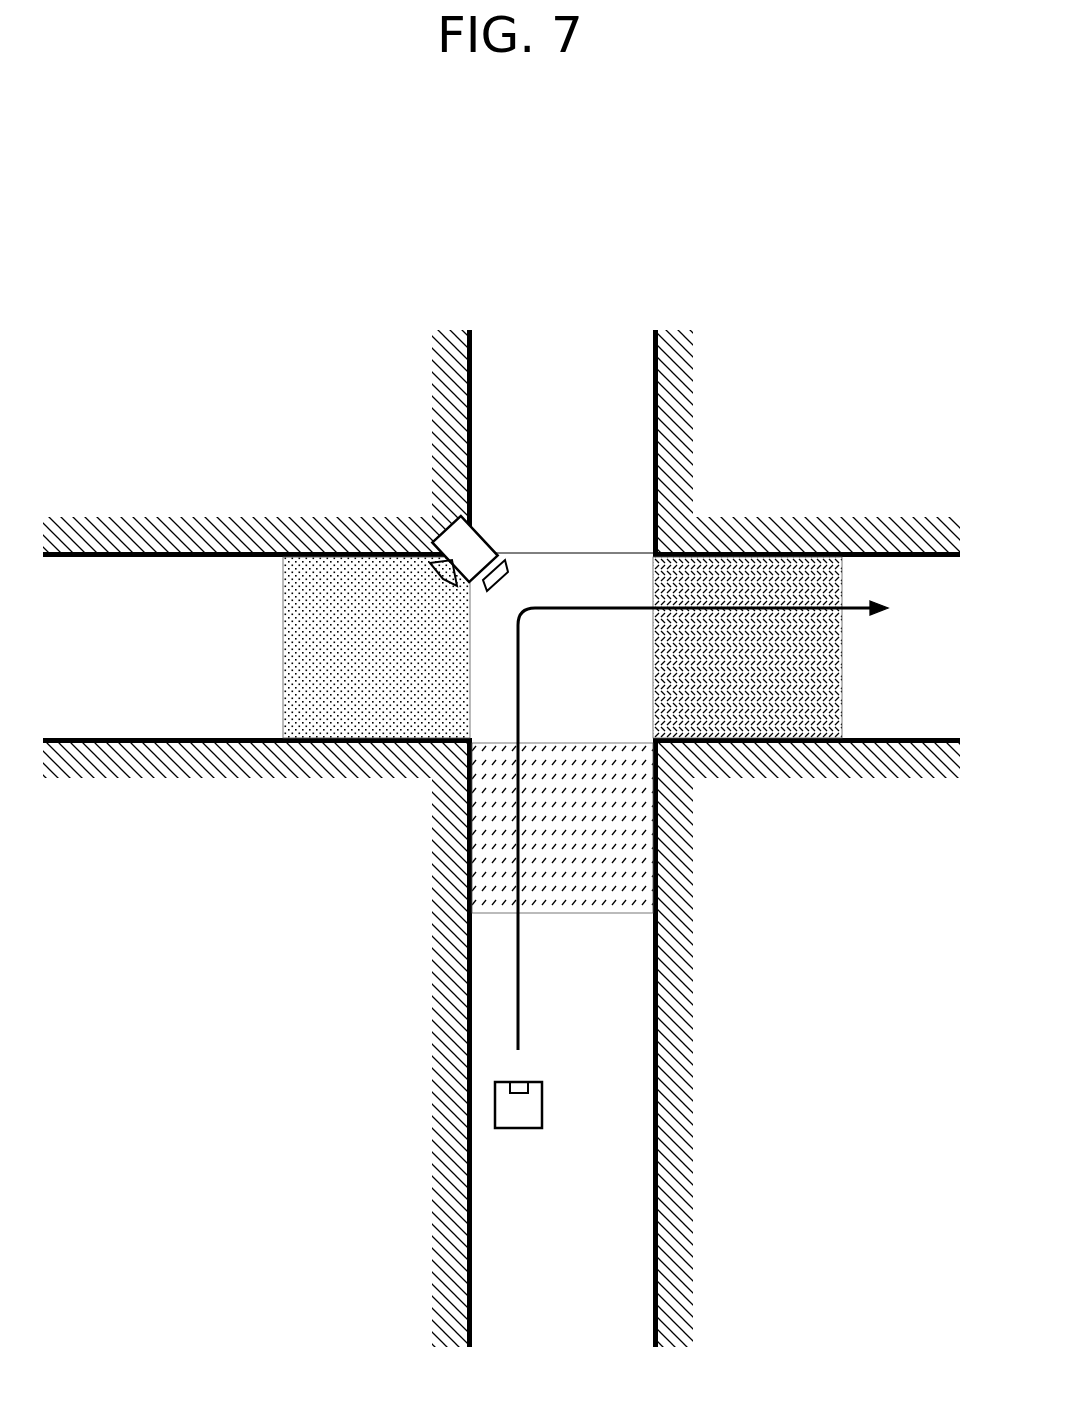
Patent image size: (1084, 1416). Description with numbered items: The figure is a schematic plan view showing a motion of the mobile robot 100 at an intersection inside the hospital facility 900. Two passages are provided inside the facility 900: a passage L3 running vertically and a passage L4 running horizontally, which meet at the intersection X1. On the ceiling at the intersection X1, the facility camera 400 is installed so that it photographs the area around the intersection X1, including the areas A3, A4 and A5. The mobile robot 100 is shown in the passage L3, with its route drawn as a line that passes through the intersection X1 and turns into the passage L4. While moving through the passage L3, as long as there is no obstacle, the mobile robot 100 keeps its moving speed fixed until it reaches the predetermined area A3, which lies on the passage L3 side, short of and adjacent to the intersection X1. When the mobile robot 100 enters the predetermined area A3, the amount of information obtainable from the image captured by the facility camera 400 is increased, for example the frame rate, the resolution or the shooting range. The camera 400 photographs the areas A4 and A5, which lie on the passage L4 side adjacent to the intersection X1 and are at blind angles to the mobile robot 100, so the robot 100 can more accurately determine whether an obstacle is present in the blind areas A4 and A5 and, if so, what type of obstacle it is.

The hospital facility 900 is at (477, 203).
The passage L3 is at (488, 1237).
The passage L4 is at (925, 578).
The intersection X1 is at (555, 573).
The predetermined area A5 is at (327, 577).
The predetermined area A4 is at (800, 578).
The predetermined area A3 is at (487, 843).
The facility camera 400 is at (457, 538).
The mobile robot 100 is at (527, 1082).